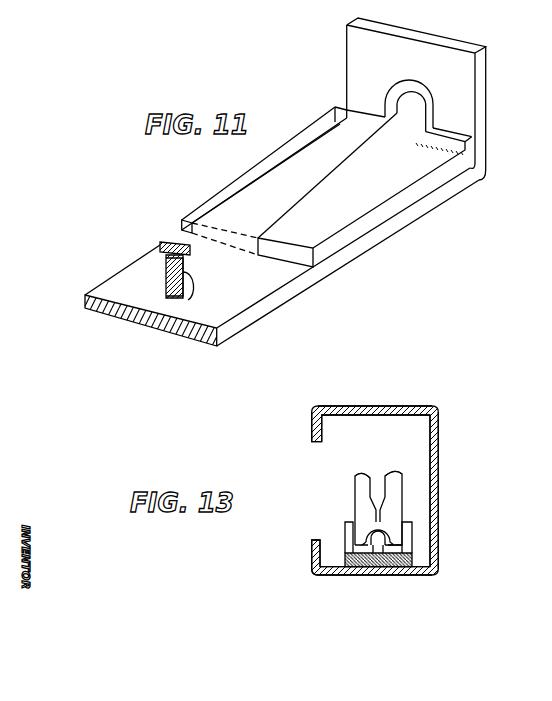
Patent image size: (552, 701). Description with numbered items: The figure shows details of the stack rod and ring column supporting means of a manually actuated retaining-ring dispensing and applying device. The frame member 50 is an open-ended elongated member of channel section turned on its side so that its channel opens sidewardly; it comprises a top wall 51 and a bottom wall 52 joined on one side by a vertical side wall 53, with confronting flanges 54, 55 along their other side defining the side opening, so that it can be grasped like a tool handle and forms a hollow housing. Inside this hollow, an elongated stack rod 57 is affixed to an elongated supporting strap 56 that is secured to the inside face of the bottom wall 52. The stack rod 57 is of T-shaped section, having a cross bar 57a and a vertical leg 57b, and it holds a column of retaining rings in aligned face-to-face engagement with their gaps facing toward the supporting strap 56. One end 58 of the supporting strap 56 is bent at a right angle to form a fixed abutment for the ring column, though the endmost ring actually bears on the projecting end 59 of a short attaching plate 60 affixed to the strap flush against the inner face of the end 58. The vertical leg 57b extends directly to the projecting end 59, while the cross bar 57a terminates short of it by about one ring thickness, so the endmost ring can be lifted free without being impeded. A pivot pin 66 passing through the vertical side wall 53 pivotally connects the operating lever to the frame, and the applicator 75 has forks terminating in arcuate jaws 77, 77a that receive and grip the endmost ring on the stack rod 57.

In FIG. 13, the frame member 50 is at (432, 563).
In FIG. 13, the top wall 51 is at (400, 405).
In FIG. 13, the bottom wall 52 is at (383, 576).
In FIG. 13, the vertical side wall 53 is at (441, 497).
In FIG. 13, the flange 54 is at (312, 422).
In FIG. 13, the flange 55 is at (312, 557).
In FIG. 11, the supporting strap 56 is at (240, 300).
In FIG. 13, the supporting strap 56 is at (349, 570).
In FIG. 11, the stack rod 57 is at (195, 282).
In FIG. 13, the stack rod 57 is at (398, 545).
In FIG. 11, the cross bar 57a is at (172, 246).
In FIG. 11, the vertical leg 57b is at (167, 272).
In FIG. 11, the end of supporting strap 58 is at (462, 72).
In FIG. 13, the end of supporting strap 58 is at (348, 530).
In FIG. 11, the projecting end 59 is at (408, 100).
In FIG. 11, the attaching plate 60 is at (407, 177).
In FIG. 13, the pivot pin 66 is at (321, 576).
In FIG. 13, the applicator 75 is at (407, 488).
In FIG. 13, the arcuate jaw 77 is at (360, 489).
In FIG. 13, the arcuate jaw 77a is at (393, 478).